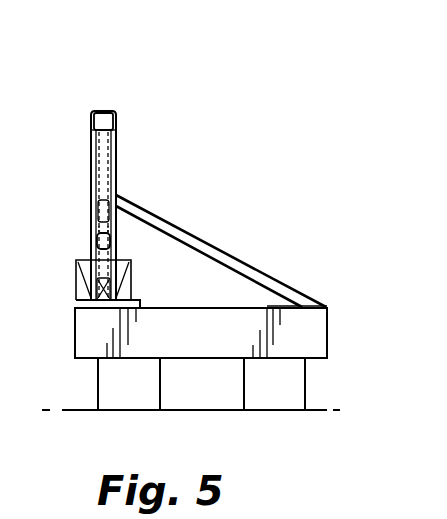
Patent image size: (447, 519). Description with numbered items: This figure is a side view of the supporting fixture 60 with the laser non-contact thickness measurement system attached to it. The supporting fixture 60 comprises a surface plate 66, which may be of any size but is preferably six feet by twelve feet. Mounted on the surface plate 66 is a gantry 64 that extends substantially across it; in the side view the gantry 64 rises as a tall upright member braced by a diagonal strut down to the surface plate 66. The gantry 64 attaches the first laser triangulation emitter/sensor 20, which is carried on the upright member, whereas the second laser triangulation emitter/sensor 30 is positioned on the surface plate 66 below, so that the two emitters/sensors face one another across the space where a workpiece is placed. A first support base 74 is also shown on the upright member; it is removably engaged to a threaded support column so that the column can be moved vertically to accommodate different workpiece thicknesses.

The supporting fixture 60 is at (186, 182).
The gantry 64 is at (90, 122).
The first support base 74 is at (100, 158).
The first laser triangulation emitter/sensor 20 is at (100, 239).
The second laser triangulation emitter/sensor 30 is at (85, 266).
The surface plate 66 is at (212, 348).